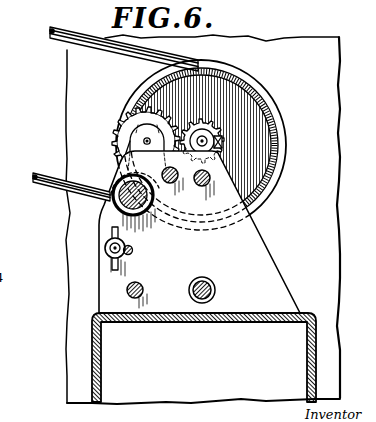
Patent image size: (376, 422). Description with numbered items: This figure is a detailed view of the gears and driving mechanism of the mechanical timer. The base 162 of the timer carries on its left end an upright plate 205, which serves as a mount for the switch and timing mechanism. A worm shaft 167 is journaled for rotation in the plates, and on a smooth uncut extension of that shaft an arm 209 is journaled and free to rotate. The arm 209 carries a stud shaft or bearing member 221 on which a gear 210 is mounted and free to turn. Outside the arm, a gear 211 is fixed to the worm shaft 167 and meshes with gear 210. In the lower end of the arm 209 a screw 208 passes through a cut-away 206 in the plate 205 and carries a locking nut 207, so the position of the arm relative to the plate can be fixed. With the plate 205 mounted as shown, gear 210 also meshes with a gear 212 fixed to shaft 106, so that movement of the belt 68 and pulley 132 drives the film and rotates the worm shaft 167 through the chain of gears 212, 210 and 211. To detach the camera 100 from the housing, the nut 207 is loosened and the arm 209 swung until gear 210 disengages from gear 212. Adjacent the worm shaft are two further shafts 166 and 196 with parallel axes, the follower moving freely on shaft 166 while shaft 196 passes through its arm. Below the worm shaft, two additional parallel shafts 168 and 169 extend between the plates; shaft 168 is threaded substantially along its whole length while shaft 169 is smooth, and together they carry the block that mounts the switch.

The belt 68 is at (51, 39).
The camera 100 is at (343, 42).
The pulley 132 is at (256, 89).
The gear 210 is at (128, 119).
The gear 212 is at (208, 127).
The shaft 106 is at (208, 143).
The stud shaft or bearing member 221 is at (143, 140).
The arm 209 is at (127, 154).
The gear 211 is at (113, 177).
The shaft 166 is at (208, 173).
The worm shaft 167 is at (127, 194).
The shaft 196 is at (177, 182).
The cut-away 206 is at (103, 240).
The screw 208 is at (133, 248).
The locking nut 207 is at (119, 266).
The upright plate 205 is at (267, 245).
The shaft 169 is at (128, 292).
The shaft 168 is at (214, 288).
The base 162 is at (92, 351).